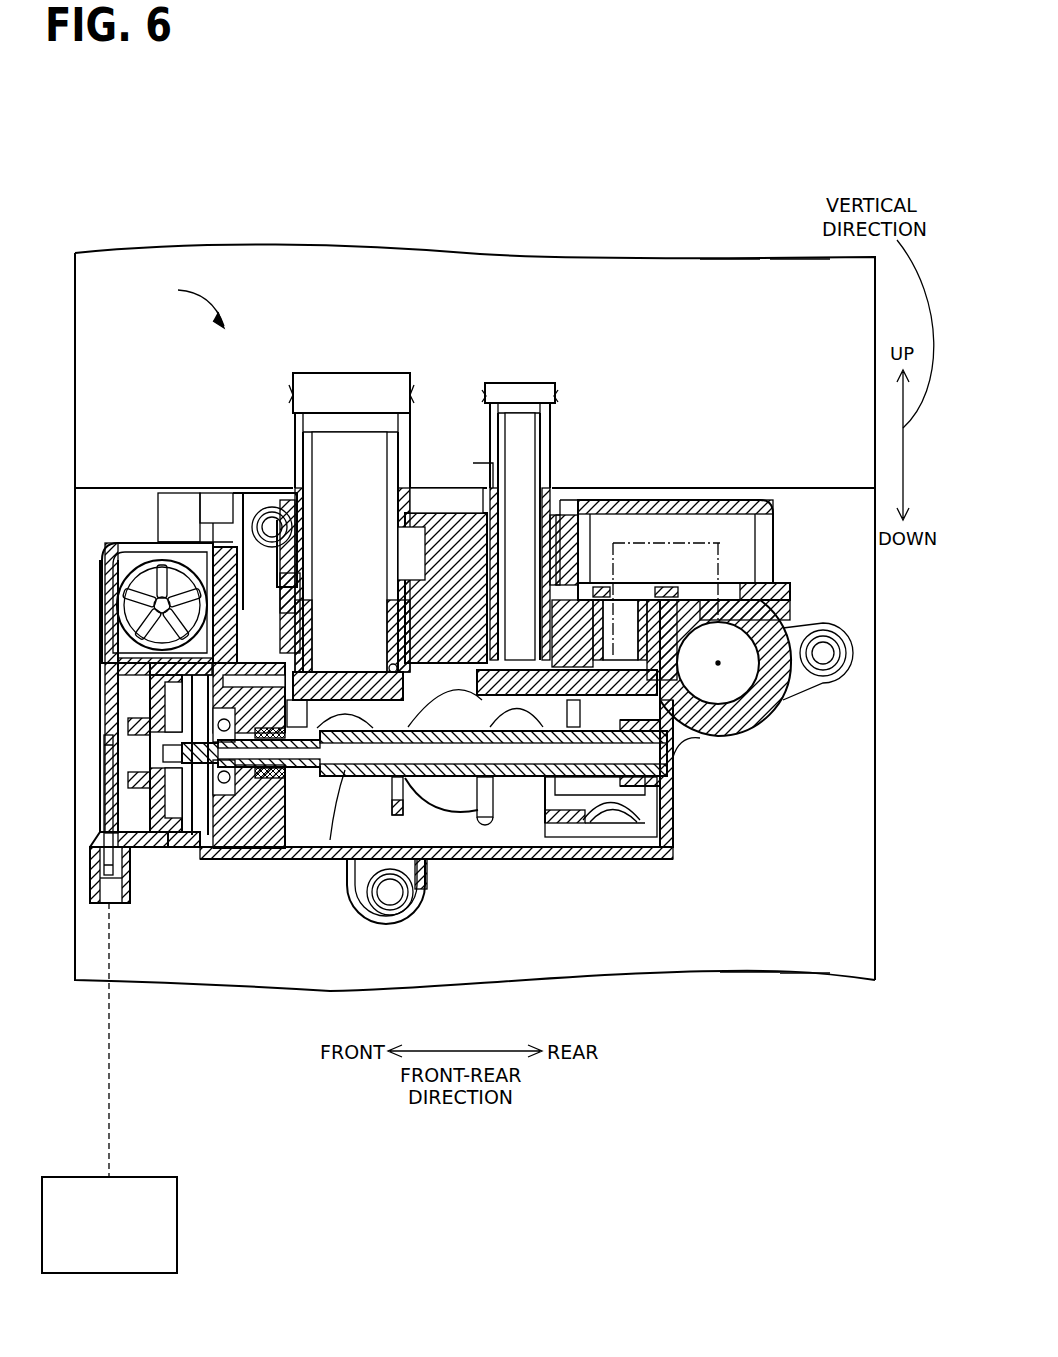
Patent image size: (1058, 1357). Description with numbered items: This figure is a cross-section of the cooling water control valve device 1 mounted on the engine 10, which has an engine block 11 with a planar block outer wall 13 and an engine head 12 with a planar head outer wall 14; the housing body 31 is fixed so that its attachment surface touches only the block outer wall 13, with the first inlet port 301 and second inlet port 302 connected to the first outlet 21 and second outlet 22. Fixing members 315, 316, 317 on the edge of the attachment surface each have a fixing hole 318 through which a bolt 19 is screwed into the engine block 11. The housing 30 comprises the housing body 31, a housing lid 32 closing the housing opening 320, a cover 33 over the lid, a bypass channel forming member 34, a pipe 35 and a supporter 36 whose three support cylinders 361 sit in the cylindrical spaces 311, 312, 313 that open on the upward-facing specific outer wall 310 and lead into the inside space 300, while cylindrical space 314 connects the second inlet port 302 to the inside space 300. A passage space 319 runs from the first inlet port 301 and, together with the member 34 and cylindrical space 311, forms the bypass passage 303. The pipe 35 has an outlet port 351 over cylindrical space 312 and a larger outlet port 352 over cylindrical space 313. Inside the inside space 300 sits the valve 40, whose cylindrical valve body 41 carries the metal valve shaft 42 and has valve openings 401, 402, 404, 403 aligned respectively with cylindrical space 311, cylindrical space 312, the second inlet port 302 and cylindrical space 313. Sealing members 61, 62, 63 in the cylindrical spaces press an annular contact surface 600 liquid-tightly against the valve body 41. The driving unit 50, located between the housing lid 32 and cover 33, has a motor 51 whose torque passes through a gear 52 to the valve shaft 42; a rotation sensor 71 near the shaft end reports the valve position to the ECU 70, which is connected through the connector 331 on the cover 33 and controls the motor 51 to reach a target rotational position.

The cooling water control valve device 1 is at (190, 303).
The engine 10 is at (118, 265).
The engine block 11 is at (756, 965).
The engine head 12 is at (739, 282).
The block outer wall 13 is at (790, 965).
The head outer wall 14 is at (791, 282).
The bolt 19 is at (828, 688).
The first outlet 21 is at (725, 683).
The second outlet 22 is at (445, 787).
The housing 30 is at (678, 490).
The housing body 31 is at (667, 860).
The housing lid 32 is at (233, 850).
The cover 33 is at (105, 668).
The bypass channel forming member 34 is at (700, 500).
The pipe 35 is at (352, 472).
The supporter 36 is at (428, 548).
The valve 40 is at (310, 827).
The valve body 41 is at (560, 735).
The valve shaft 42 is at (265, 745).
The driving unit 50 is at (117, 688).
The motor 51 is at (117, 612).
The gear 52 is at (118, 718).
The sealing member 61 is at (598, 540).
The sealing member 62 is at (521, 610).
The sealing member 63 is at (338, 610).
The electronic control unit (ECU) 70 is at (143, 1188).
The rotation sensor 71 is at (125, 757).
The inside space 300 is at (310, 830).
The first inlet port 301 is at (768, 730).
The second inlet port 302 is at (505, 775).
The bypass passage 303 is at (760, 572).
The specific outer wall 310 is at (462, 540).
The cylindrical space 311 is at (644, 540).
The cylindrical space 312 is at (568, 555).
The cylindrical space 313 is at (385, 620).
The cylindrical space 314 is at (425, 790).
The fixing member 315 is at (830, 688).
The fixing member 316 is at (372, 925).
The fixing member 317 is at (262, 488).
The fixing hole 318 is at (800, 656).
The passage space 319 is at (755, 612).
The housing opening 320 is at (190, 850).
The connector 331 is at (90, 889).
The outlet port 351 is at (514, 383).
The outlet port 352 is at (345, 373).
The support cylinder 361 is at (222, 510).
The valve opening 401 is at (597, 817).
The valve opening 402 is at (528, 810).
The valve opening 403 is at (348, 770).
The valve opening 404 is at (480, 800).
The contact surface 600 is at (325, 833).